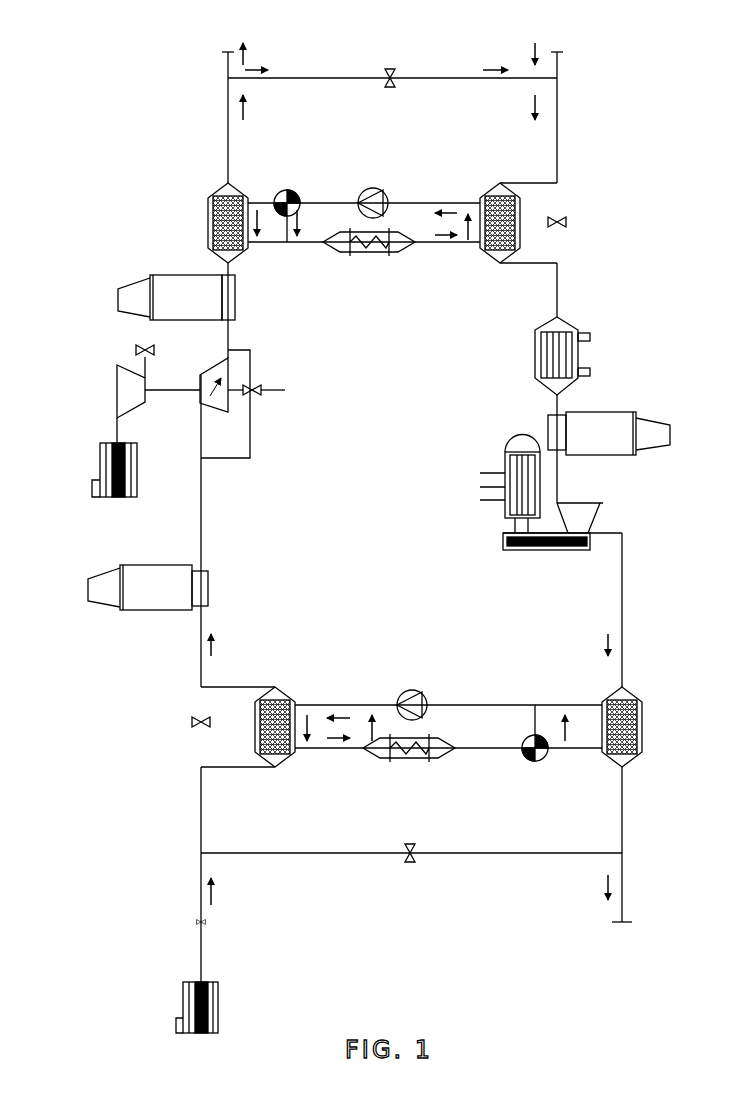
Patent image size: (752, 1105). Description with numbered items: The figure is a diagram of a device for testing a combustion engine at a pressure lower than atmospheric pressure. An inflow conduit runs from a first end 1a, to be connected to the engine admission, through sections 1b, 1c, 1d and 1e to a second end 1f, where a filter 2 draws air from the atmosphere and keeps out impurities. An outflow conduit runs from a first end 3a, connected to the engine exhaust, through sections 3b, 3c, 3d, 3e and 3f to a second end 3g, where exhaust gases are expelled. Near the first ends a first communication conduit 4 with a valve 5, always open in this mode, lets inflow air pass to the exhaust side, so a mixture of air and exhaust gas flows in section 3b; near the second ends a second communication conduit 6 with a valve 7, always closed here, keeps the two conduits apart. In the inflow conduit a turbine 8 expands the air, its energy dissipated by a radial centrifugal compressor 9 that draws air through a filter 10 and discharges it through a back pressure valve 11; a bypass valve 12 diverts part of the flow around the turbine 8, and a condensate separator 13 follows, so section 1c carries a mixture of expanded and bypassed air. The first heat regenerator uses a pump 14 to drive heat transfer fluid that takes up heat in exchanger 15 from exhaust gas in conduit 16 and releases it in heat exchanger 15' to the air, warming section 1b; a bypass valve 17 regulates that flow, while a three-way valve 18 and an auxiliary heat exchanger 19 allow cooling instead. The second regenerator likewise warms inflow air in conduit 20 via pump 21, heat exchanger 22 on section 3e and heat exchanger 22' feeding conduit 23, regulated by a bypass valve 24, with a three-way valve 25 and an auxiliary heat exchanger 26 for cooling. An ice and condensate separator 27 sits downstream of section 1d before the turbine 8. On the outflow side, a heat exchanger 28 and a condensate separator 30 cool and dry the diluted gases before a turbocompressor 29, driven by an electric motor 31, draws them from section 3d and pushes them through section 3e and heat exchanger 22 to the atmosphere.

The first end of the inflow conduit 1a is at (226, 58).
The inflow conduit section 1b is at (226, 118).
The inflow conduit section 1c is at (237, 277).
The inflow conduit section 1d is at (199, 650).
The inflow conduit section 1e is at (199, 820).
The second end of the inflow conduit 1f is at (199, 892).
The filter 2 is at (182, 983).
The first end of the outflow conduit 3a is at (559, 60).
The outflow conduit section 3b is at (559, 125).
The outflow conduit section 3c is at (559, 296).
The outflow conduit section 3d is at (559, 488).
The outflow conduit section 3e is at (624, 598).
The outflow conduit section 3f is at (624, 812).
The second end of the outflow conduit 3g is at (624, 893).
The first communication conduit 4 is at (442, 78).
The valve 5 is at (382, 87).
The second communication conduit 6 is at (340, 853).
The valve 7 is at (407, 863).
The turbine 8 is at (214, 372).
The radial centrifugal compressor 9 is at (116, 385).
The filter 10 is at (99, 470).
The back pressure valve 11 is at (138, 348).
The bypass valve 12 is at (265, 388).
The condensate separator 13 is at (135, 284).
The pump 14 is at (380, 188).
The exchanger 15 is at (366, 194).
The heat exchanger 15' is at (194, 223).
The conduit 16 is at (506, 186).
The bypass valve 17 is at (569, 222).
The three-way valve 18 is at (295, 188).
The auxiliary heat exchanger 19 is at (405, 254).
The conduit 20 is at (206, 765).
The pump 21 is at (424, 692).
The heat exchanger 22 is at (649, 727).
The heat exchanger 22' is at (297, 710).
The conduit 23 is at (236, 686).
The bypass valve 24 is at (192, 726).
The three-way valve 25 is at (523, 756).
The auxiliary heat exchanger 26 is at (458, 746).
The ice and condensate separator 27 is at (162, 565).
The heat exchanger 28 is at (565, 327).
The turbocompressor 29 is at (604, 504).
The condensate separator 30 is at (612, 412).
The electric motor 31 is at (506, 440).